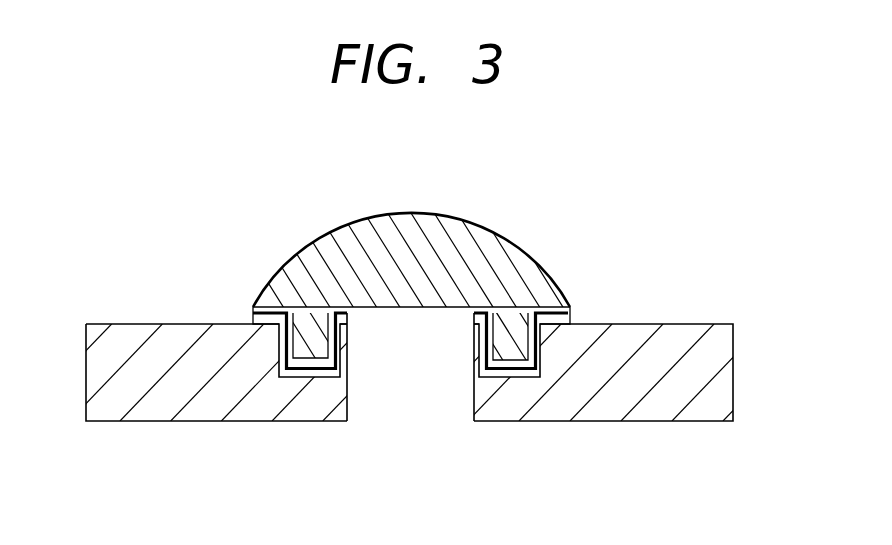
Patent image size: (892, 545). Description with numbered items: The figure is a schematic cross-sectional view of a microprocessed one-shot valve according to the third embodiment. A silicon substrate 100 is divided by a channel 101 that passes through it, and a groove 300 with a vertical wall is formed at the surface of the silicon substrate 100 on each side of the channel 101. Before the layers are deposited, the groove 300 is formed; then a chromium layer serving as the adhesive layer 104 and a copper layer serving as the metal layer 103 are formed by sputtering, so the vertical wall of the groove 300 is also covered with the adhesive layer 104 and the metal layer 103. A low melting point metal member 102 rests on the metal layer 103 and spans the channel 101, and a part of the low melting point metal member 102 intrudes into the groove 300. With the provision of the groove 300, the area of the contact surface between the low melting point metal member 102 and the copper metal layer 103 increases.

The silicon substrate 100 is at (662, 325).
The channel 101 is at (410, 413).
The low melting point metal member 102 is at (453, 223).
The metal layer 103 is at (253, 311).
The adhesive layer 104 is at (252, 316).
The groove 300 is at (513, 323).